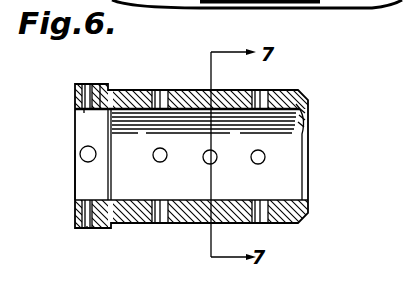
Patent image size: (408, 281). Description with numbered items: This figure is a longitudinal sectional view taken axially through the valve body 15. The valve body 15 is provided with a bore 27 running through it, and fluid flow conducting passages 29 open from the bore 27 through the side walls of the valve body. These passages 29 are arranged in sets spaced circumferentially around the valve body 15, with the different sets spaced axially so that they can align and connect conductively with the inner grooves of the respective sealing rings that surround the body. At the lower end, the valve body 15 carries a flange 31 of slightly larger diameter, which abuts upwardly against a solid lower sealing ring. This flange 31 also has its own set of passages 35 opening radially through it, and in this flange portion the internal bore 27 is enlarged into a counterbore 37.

The valve body 15 is at (304, 110).
The bore 27 is at (304, 140).
The fluid flow conducting passages 29 is at (163, 200).
The flange 31 is at (100, 84).
The passages 35 is at (84, 110).
The enlarged counterbore 37 is at (80, 197).